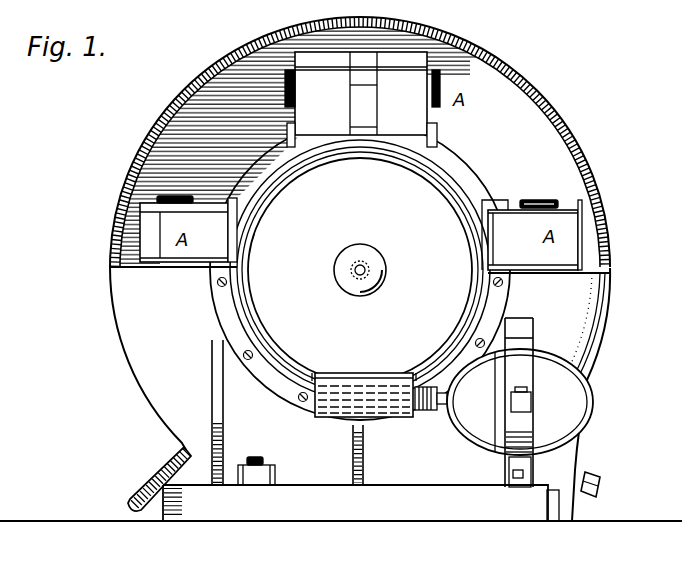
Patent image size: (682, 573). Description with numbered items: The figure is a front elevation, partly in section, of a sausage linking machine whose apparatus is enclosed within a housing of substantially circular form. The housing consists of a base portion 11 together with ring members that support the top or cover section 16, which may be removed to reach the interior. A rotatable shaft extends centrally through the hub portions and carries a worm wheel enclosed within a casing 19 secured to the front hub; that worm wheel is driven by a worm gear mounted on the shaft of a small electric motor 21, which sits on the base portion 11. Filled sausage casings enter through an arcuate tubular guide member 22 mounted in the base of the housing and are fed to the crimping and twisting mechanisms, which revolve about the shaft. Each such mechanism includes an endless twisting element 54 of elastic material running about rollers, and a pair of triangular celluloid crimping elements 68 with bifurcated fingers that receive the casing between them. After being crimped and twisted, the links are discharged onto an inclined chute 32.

The base portion 11 is at (470, 512).
The top or cover section 16 is at (563, 143).
The casing 19 is at (277, 313).
The electric motor 21 is at (472, 418).
The arcuate tubular guide member 22 is at (598, 475).
The chute 32 is at (152, 480).
The endless twisting element 54 is at (362, 99).
The crimping element 68 is at (440, 82).